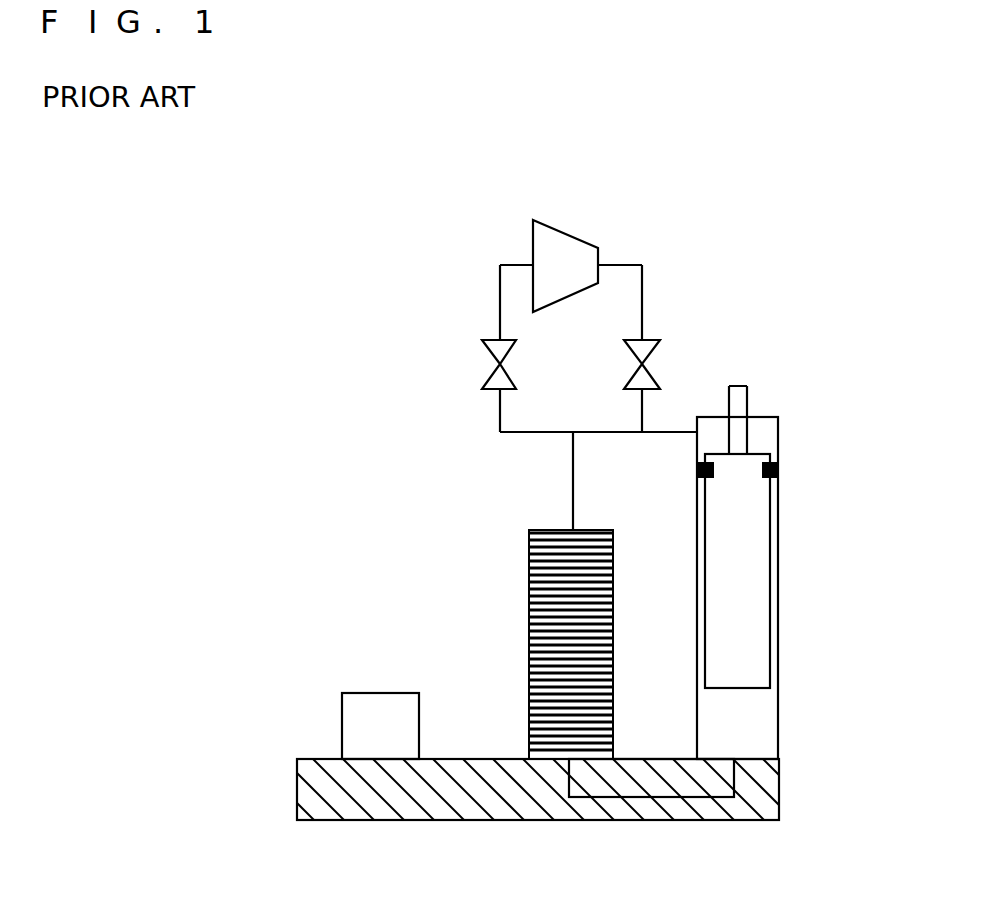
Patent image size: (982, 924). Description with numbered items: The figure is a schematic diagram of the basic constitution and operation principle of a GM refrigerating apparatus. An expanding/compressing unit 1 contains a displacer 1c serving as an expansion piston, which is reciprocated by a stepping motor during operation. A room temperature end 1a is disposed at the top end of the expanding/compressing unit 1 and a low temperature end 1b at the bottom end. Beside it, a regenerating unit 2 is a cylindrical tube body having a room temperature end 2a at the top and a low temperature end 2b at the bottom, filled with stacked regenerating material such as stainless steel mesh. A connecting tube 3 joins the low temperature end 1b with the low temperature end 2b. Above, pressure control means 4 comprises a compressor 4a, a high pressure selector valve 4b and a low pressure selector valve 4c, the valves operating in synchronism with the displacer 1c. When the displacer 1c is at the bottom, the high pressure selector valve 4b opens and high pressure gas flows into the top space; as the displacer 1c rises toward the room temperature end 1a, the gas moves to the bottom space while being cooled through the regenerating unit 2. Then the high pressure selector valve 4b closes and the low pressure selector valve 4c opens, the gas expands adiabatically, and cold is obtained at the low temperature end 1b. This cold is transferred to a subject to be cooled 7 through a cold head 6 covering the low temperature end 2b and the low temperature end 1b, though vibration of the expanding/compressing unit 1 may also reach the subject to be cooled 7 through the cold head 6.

The expanding/compressing unit 1 is at (793, 569).
The room temperature end 1a is at (770, 427).
The low temperature end 1b is at (767, 752).
The displacer 1c is at (750, 600).
The regenerating unit 2 is at (532, 622).
The room temperature end 2a is at (529, 538).
The low temperature end 2b is at (528, 750).
The connecting tube 3 is at (673, 800).
The pressure control means 4 is at (562, 352).
The compressor 4a is at (578, 253).
The high pressure selector valve 4b is at (650, 352).
The low pressure selector valve 4c is at (494, 352).
The cold head 6 is at (542, 819).
The subject to be cooled 7 is at (357, 720).